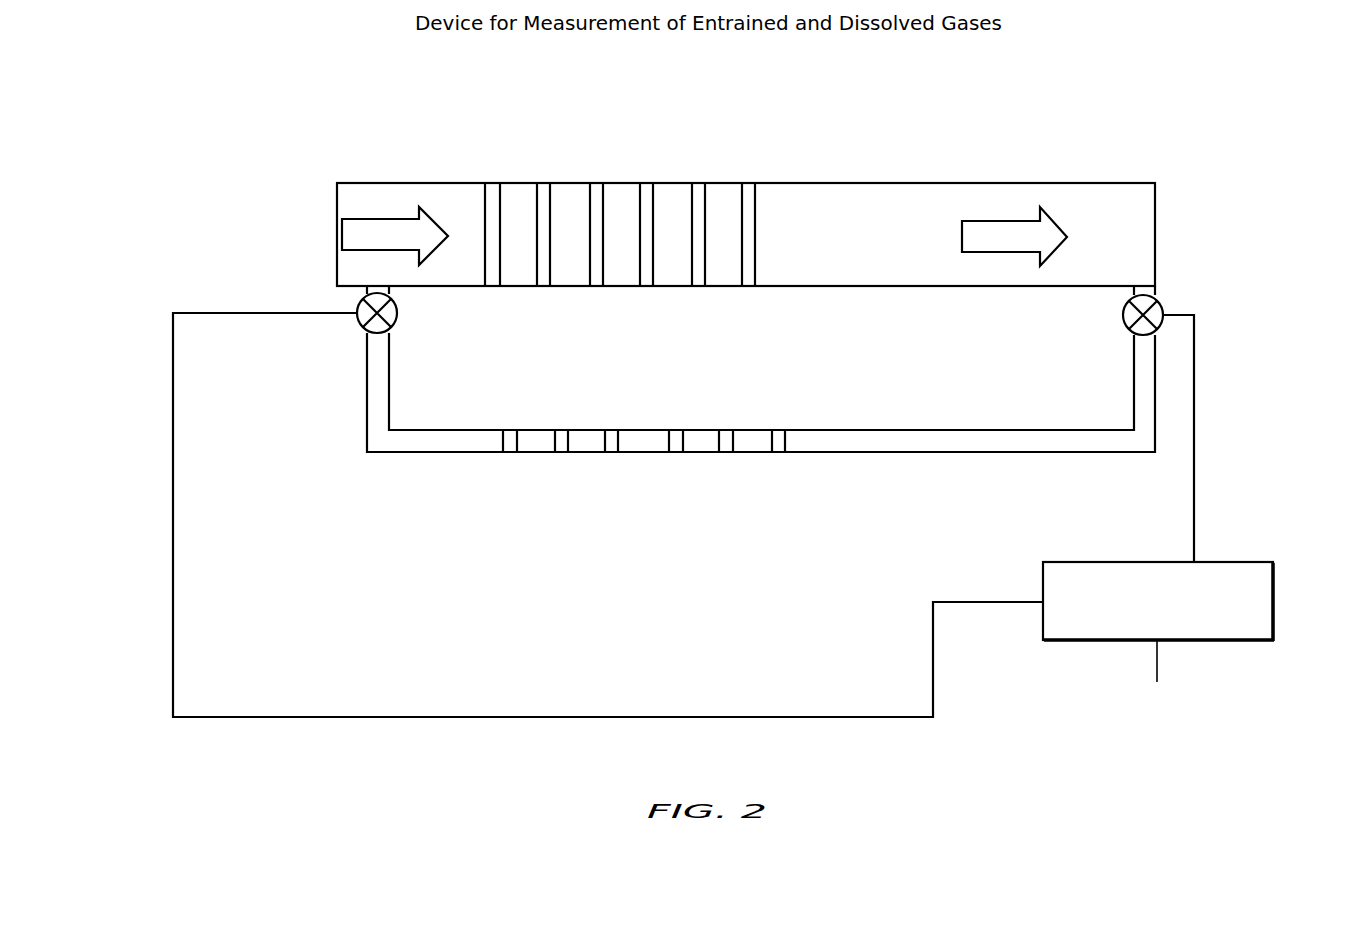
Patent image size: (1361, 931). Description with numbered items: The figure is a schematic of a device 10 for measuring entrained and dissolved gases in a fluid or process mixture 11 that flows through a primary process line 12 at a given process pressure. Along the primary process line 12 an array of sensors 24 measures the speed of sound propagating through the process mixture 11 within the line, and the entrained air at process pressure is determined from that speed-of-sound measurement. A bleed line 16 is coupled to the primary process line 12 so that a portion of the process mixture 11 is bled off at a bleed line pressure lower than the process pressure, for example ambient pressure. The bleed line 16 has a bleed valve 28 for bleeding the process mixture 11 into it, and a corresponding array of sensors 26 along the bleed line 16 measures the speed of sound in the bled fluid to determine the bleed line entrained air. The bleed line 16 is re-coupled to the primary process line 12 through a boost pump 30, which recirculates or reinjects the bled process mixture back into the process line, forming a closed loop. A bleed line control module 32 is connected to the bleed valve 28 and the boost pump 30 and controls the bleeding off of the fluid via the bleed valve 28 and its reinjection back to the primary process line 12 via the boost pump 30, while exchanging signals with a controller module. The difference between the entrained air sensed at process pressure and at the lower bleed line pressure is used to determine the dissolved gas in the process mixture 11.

The device 10 is at (236, 103).
The fluid or process mixture 11 is at (268, 236).
The primary process line 12 is at (1025, 183).
The bleed line 16 is at (367, 432).
The array of sensors 24 is at (763, 175).
The array of sensors 26 is at (793, 460).
The bleed valve 28 is at (398, 308).
The boost pump 30 is at (1162, 306).
The bleed line control module 32 is at (1077, 561).